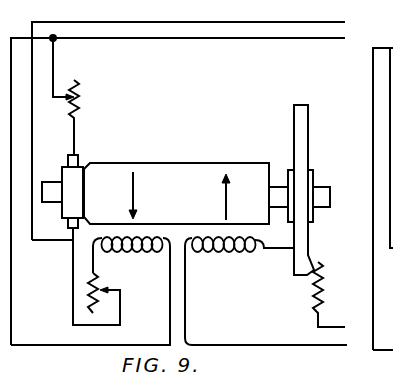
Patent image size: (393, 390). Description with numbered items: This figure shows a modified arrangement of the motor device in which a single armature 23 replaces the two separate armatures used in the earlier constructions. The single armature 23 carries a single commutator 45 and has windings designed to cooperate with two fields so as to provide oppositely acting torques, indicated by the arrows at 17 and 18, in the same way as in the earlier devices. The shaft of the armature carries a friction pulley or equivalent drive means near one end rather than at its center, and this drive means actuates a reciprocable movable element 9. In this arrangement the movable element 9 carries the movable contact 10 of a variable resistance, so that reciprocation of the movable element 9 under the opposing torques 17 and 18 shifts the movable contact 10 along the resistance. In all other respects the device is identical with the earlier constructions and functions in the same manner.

The single commutator 45 is at (74, 172).
The single armature 23 is at (168, 166).
The torque 17 is at (128, 193).
The torque 18 is at (222, 194).
The movable element 9 is at (307, 143).
The movable contact 10 is at (302, 278).